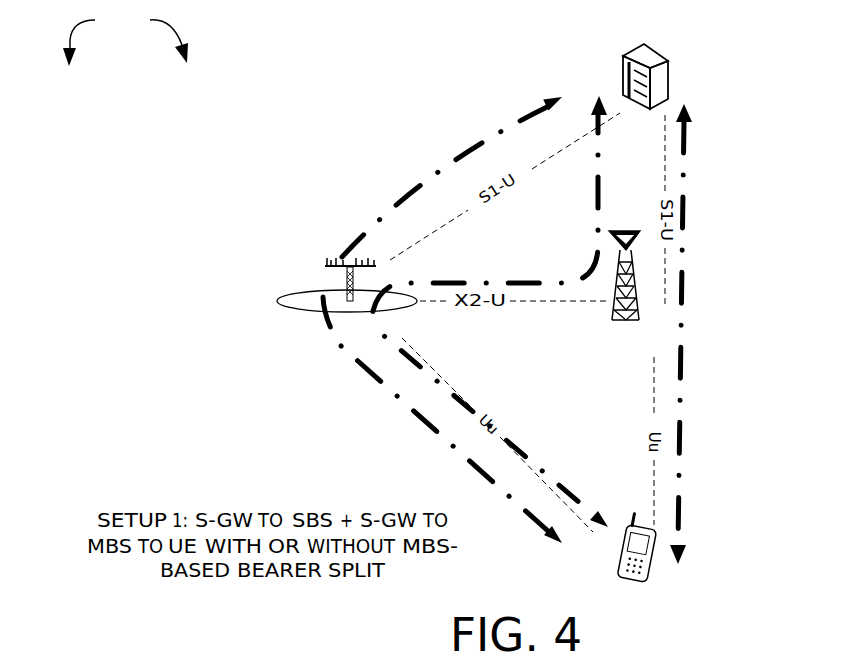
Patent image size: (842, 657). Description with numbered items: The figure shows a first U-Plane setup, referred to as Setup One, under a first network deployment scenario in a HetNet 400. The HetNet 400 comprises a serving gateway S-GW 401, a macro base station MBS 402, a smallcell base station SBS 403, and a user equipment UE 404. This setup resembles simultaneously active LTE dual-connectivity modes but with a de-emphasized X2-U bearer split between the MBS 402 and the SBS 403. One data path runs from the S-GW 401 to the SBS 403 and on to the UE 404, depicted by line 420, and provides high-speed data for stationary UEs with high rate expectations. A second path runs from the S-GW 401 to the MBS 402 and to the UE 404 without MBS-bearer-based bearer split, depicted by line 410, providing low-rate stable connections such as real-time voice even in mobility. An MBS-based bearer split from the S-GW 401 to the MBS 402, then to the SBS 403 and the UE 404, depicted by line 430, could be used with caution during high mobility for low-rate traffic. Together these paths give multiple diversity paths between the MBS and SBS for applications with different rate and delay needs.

The HetNet 400 is at (125, 39).
The serving gateway S-GW 401 is at (666, 56).
The macro base station MBS 402 is at (636, 232).
The smallcell base station SBS 403 is at (331, 263).
The user equipment UE 404 is at (639, 583).
The S-GW to MBS to UE data path 410 is at (683, 290).
The S-GW to SBS to UE data path 420 is at (417, 182).
The MBS-based bearer split path 430 is at (515, 472).